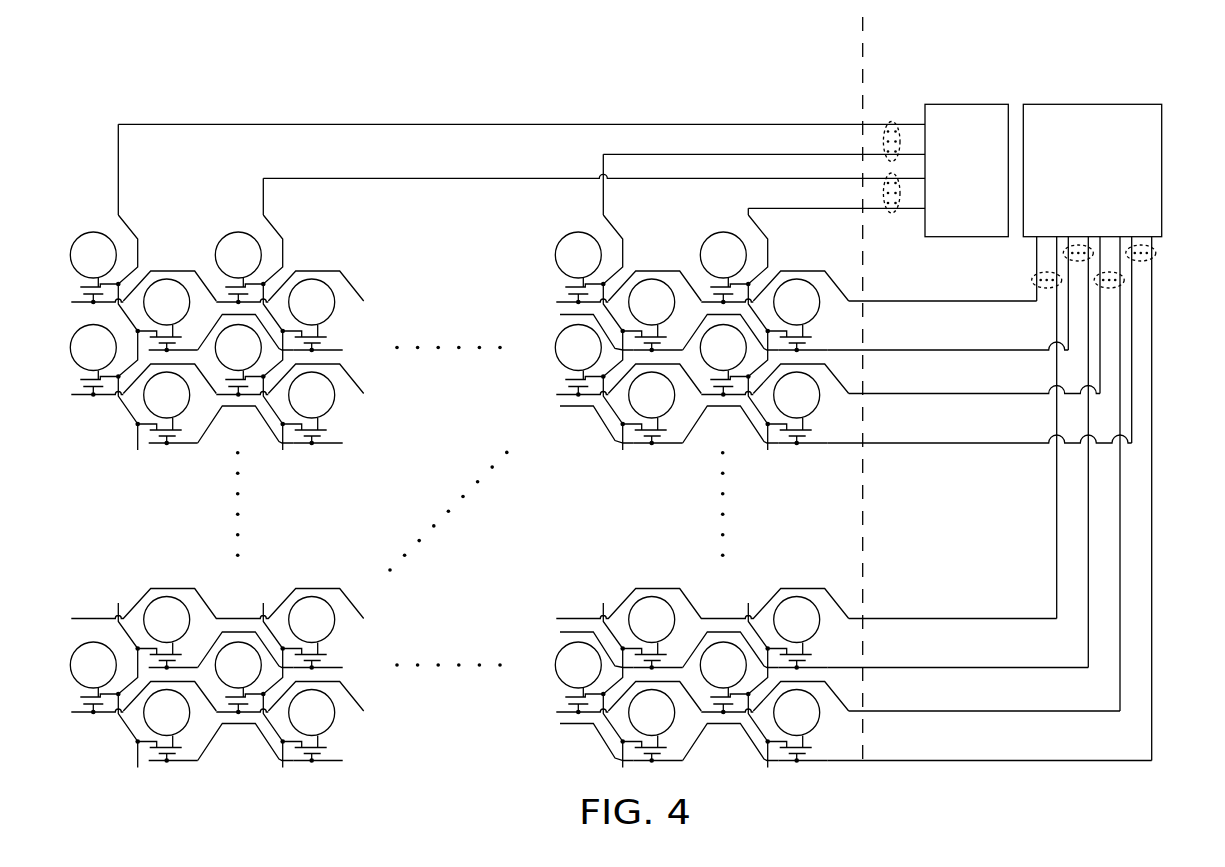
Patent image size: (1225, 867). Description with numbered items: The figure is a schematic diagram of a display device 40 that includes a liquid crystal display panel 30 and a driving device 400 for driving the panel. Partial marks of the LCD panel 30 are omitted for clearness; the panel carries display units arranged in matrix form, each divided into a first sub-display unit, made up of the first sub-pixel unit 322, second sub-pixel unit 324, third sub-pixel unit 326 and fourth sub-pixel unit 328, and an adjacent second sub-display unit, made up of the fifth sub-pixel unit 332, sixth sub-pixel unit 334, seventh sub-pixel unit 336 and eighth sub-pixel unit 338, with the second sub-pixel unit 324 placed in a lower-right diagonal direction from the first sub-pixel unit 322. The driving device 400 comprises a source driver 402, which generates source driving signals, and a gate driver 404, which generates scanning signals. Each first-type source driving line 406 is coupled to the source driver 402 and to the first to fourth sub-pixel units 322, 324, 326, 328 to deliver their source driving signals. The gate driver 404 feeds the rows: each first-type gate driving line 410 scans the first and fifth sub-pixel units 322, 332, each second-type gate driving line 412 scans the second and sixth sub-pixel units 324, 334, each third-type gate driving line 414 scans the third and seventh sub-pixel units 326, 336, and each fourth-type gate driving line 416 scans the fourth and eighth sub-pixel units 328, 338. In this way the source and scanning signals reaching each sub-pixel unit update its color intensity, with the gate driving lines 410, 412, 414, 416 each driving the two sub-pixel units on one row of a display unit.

The liquid crystal display panel 30 is at (782, 50).
The display device 40 is at (1110, 63).
The driving device 400 is at (945, 53).
The source driver 402 is at (975, 103).
The gate driver 404 is at (1127, 103).
The first-type source driving lines 406 is at (892, 122).
The first-type gate driving lines 410 is at (1032, 280).
The second-type gate driving lines 412 is at (1062, 253).
The third-type gate driving lines 414 is at (1127, 280).
The fourth-type gate driving lines 416 is at (1157, 253).
The first sub-pixel unit 322 is at (339, 268).
The second sub-pixel unit 324 is at (408, 474).
The third sub-pixel unit 326 is at (339, 520).
The fourth sub-pixel unit 328 is at (408, 567).
The fifth sub-pixel unit 332 is at (484, 268).
The sixth sub-pixel unit 334 is at (553, 474).
The seventh sub-pixel unit 336 is at (484, 520).
The eighth sub-pixel unit 338 is at (553, 567).